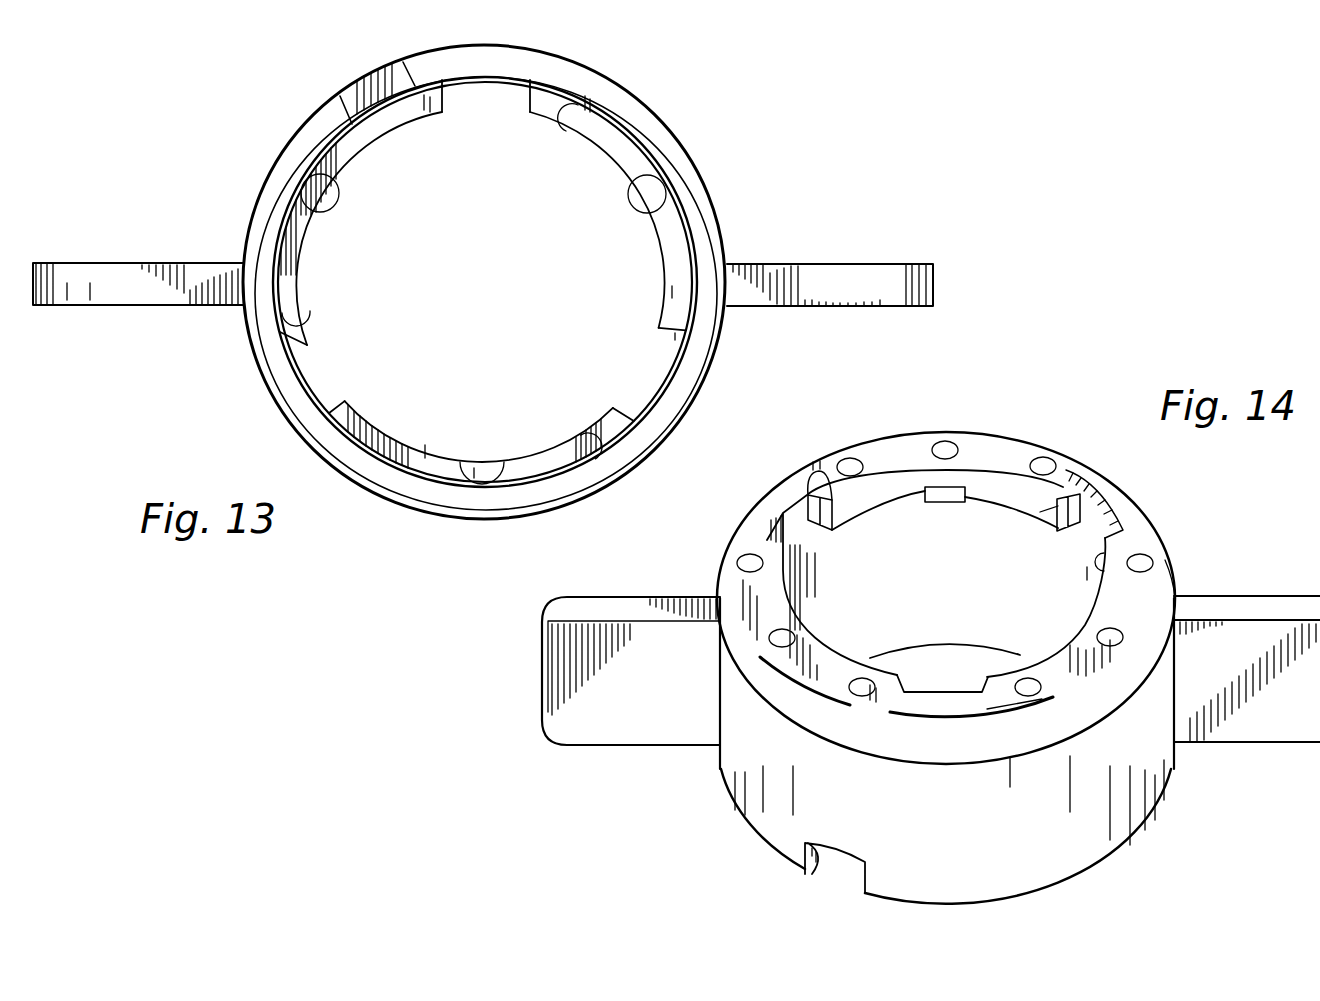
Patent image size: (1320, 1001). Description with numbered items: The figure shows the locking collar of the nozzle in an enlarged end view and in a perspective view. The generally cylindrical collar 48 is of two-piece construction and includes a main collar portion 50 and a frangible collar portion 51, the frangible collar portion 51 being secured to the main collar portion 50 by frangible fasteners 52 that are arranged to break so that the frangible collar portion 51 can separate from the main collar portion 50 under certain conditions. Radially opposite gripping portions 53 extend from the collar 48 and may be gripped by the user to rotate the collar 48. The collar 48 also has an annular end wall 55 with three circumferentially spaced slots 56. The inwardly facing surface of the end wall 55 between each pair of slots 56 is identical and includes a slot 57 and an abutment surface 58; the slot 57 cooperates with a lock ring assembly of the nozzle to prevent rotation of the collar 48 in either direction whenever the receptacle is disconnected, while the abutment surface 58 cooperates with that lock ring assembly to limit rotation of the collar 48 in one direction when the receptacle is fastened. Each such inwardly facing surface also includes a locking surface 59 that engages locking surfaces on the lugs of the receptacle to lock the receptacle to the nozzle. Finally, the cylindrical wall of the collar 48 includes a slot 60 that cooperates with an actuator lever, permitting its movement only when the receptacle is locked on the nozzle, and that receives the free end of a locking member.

In FIG. 14, the collar 48 is at (948, 432).
In FIG. 14, the main collar portion 50 is at (1172, 768).
In FIG. 14, the frangible collar portion 51 is at (1180, 587).
In FIG. 14, the frangible fasteners 52 is at (860, 462).
In FIG. 13, the gripping portions 53 is at (105, 281).
In FIG. 14, the gripping portions 53 is at (663, 686).
In FIG. 14, the annular end wall 55 is at (1143, 613).
In FIG. 13, the slots 56 is at (443, 97).
In FIG. 14, the slots 56 is at (819, 470).
In FIG. 13, the slot 57 is at (327, 198).
In FIG. 14, the slot 57 is at (937, 502).
In FIG. 13, the abutment surface 58 is at (568, 104).
In FIG. 14, the abutment surface 58 is at (1040, 514).
In FIG. 13, the locking surface 59 is at (365, 138).
In FIG. 14, the locking surface 59 is at (878, 512).
In FIG. 13, the slot 60 is at (358, 93).
In FIG. 14, the slot 60 is at (855, 884).